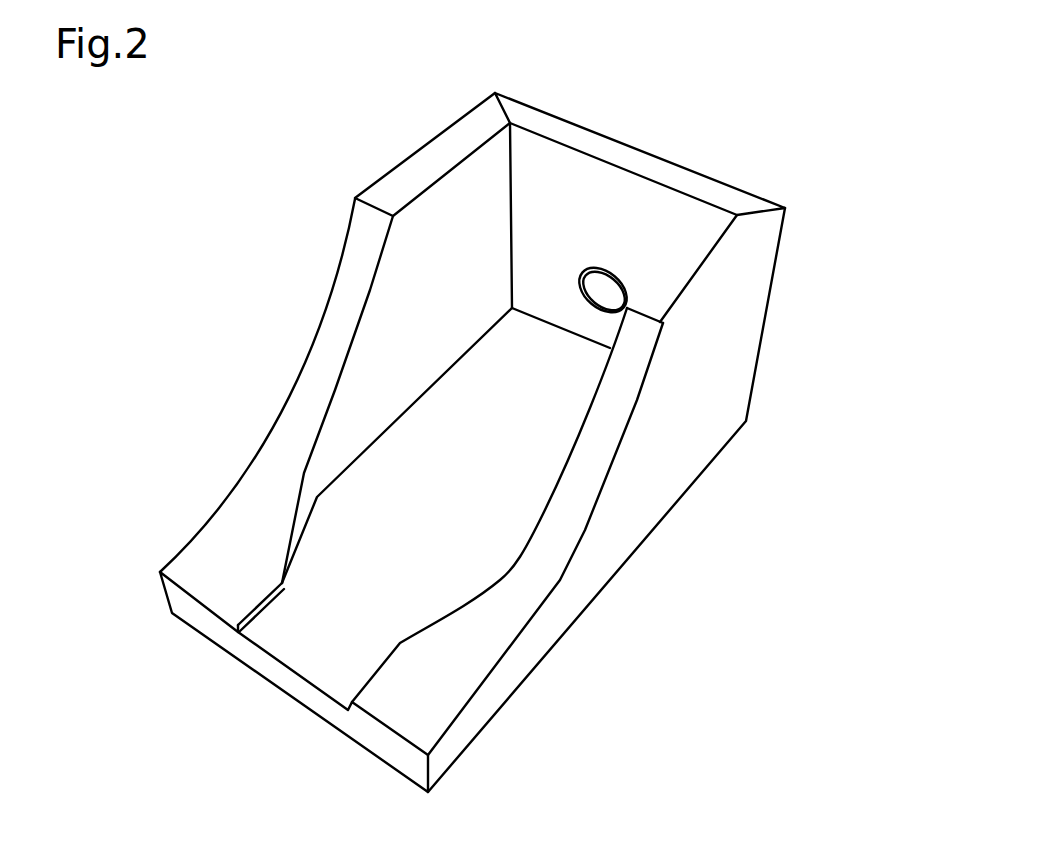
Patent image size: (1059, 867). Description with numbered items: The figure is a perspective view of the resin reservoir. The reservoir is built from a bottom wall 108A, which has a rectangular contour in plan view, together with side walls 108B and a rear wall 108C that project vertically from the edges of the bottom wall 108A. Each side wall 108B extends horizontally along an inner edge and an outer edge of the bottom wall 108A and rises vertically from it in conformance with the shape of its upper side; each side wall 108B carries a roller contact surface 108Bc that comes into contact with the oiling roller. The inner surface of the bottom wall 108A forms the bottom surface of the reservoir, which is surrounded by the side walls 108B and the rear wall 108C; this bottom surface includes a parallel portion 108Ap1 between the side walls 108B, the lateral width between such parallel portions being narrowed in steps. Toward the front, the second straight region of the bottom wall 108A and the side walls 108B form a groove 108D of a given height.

The bottom wall 108A is at (288, 678).
The side wall 108B is at (445, 155).
The roller contact surface 108Bc is at (253, 527).
The rear wall 108C is at (623, 157).
The parallel portion 108Ap1 is at (362, 453).
The groove 108D is at (308, 662).